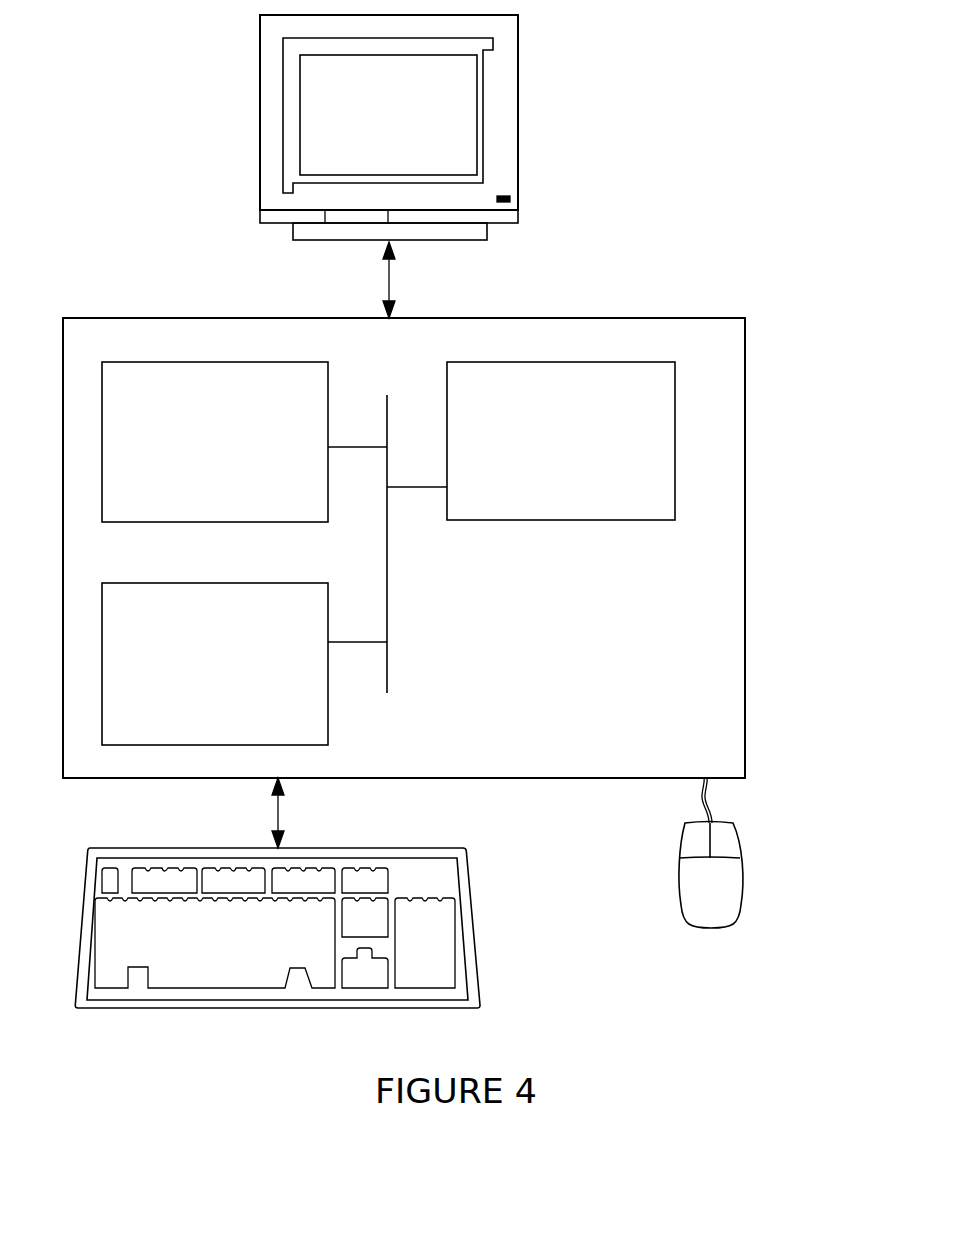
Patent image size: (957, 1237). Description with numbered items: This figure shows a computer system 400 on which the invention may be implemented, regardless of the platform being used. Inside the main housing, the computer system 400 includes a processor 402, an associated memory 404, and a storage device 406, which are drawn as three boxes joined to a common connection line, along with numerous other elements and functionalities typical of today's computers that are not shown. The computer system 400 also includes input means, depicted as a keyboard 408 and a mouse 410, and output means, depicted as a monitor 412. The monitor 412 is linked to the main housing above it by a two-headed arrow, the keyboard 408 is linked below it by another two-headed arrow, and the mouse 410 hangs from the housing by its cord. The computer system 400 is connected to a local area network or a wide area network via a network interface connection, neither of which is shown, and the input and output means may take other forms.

The computer system 400 is at (760, 171).
The processor 402 is at (198, 451).
The memory 404 is at (196, 675).
The storage device 406 is at (540, 451).
The keyboard 408 is at (218, 953).
The mouse 410 is at (752, 845).
The monitor 412 is at (371, 128).